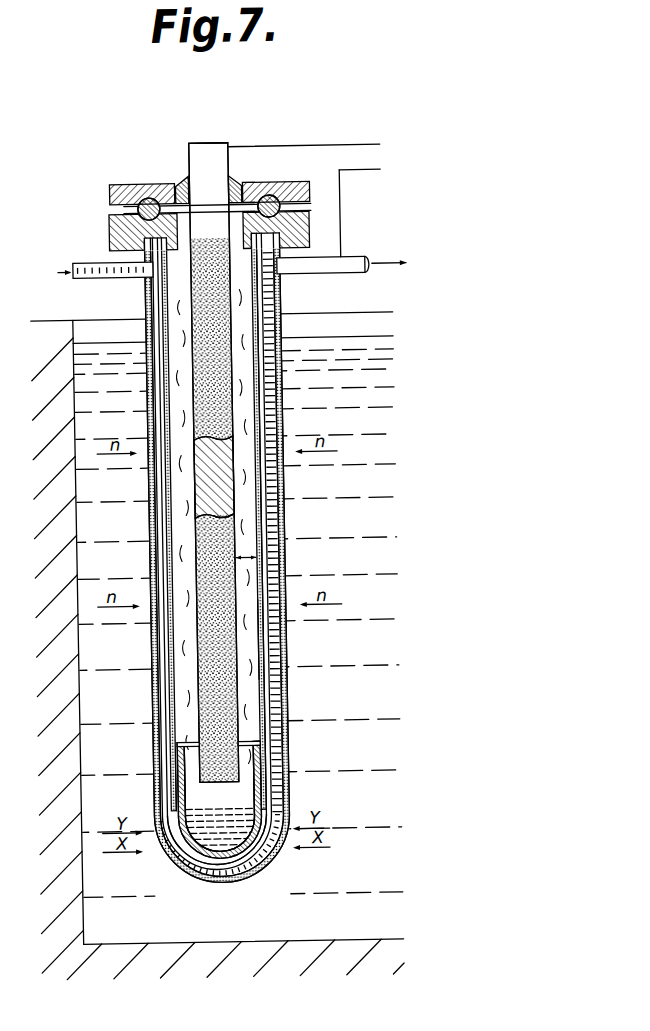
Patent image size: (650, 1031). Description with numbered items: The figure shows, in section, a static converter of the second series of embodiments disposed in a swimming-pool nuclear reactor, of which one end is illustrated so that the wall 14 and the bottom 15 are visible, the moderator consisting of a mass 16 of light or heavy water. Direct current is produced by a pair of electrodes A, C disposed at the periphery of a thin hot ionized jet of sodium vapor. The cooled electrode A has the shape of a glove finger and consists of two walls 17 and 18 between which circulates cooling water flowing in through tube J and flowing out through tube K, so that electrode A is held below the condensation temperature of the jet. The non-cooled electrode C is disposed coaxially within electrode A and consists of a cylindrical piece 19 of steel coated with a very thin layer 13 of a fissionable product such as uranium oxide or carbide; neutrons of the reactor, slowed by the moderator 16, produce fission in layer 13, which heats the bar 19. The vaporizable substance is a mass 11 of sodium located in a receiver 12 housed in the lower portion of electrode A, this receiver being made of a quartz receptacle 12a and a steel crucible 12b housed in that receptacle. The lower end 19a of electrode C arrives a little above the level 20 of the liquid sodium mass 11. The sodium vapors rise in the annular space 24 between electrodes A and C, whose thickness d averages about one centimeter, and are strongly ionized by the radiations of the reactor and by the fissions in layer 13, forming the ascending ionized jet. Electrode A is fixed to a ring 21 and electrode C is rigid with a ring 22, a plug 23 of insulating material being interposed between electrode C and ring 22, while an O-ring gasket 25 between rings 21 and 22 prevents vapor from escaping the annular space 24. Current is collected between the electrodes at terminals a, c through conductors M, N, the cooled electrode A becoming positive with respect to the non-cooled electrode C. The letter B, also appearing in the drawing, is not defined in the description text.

The mass of sodium 11 is at (200, 848).
The receiver 12 is at (271, 752).
The receptacle 12a is at (259, 752).
The crucible 12b is at (251, 771).
The layer of fissionable product 13 is at (234, 473).
The wall of the reactor 14 is at (72, 560).
The bottom of the reactor 15 is at (258, 944).
The mass of moderator 16 is at (93, 653).
The wall of electrode A 17 is at (263, 715).
The wall of electrode A 18 is at (280, 685).
The cylindrical piece 19 is at (210, 478).
The lower end of electrode C 19a is at (186, 795).
The level of the mass 20 is at (219, 805).
The ring 21 is at (115, 221).
The ring 22 is at (294, 188).
The plug of insulating material 23 is at (193, 180).
The annular space 24 is at (254, 639).
The O-ring gasket 25 is at (156, 197).
The cooled electrode A is at (262, 528).
The coolant liquid B is at (263, 586).
The non-cooled electrode C is at (200, 528).
The terminal c is at (235, 152).
The thickness of the annular space d is at (246, 548).
The tube J is at (98, 260).
The tube K is at (355, 267).
The terminal a is at (347, 257).
The conductor N is at (398, 145).
The conductor M is at (399, 170).